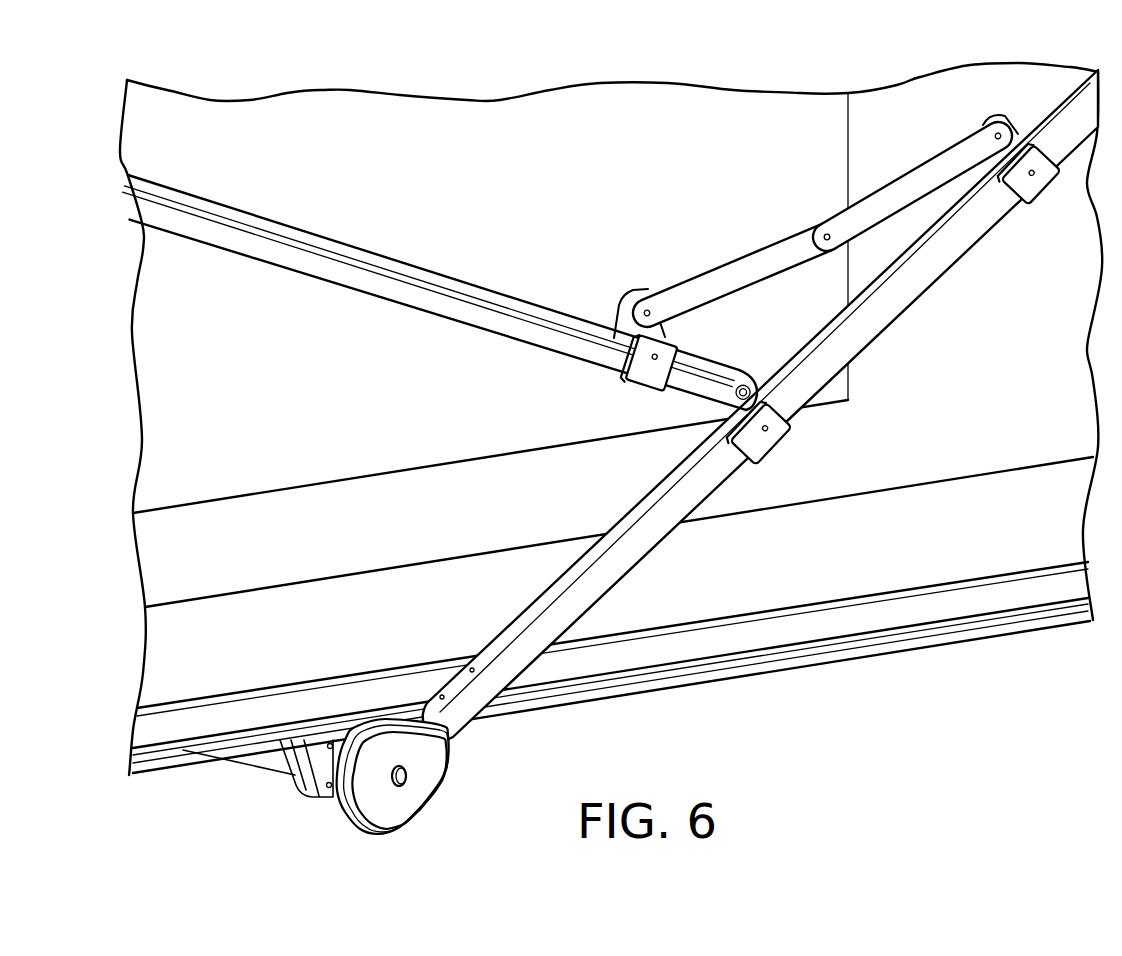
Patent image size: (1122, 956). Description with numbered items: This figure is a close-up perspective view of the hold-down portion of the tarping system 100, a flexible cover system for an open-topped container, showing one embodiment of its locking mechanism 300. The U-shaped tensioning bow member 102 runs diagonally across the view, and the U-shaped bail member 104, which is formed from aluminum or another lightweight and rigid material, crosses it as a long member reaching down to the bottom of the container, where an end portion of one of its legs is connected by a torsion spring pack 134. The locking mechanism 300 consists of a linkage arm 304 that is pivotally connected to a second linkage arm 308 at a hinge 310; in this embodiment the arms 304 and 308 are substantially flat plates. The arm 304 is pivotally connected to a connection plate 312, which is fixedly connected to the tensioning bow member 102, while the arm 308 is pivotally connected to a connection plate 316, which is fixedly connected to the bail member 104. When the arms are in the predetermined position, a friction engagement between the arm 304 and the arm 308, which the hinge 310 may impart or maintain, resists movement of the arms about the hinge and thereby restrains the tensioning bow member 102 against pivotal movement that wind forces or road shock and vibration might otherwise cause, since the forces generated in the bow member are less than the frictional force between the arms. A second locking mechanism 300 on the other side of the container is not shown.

The tarping system 100 is at (887, 508).
The U-shaped tensioning bow member 102 is at (417, 263).
The U-shaped bail member 104 is at (888, 330).
The torsion spring pack 134 is at (358, 728).
The locking mechanism 300 is at (816, 219).
The linkage arm 304 is at (720, 263).
The linkage arm 308 is at (888, 177).
The hinge 310 is at (817, 221).
The connection plate 312 is at (637, 388).
The connection plate 316 is at (1037, 198).